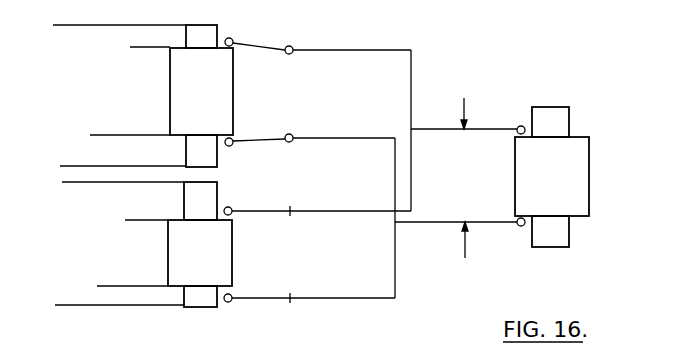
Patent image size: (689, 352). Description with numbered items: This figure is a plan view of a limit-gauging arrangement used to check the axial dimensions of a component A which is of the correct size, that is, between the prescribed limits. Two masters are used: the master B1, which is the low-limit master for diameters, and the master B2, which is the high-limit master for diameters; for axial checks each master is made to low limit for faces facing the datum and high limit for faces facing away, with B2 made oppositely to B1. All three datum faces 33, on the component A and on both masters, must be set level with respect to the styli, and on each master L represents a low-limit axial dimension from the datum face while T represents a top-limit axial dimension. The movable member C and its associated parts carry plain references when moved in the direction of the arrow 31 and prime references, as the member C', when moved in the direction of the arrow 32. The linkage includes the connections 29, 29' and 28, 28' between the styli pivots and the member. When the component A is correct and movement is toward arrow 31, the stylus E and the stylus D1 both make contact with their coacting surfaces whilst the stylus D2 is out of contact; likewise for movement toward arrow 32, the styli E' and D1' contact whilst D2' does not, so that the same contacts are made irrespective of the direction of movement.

The datum faces 33 is at (208, 24).
The connecting rod 29 is at (322, 38).
The connecting rod 29' is at (314, 126).
The connecting rod 28 is at (321, 201).
The connecting rod 28' is at (313, 288).
The arrow 31 is at (466, 120).
The arrow 32 is at (466, 234).
The component A is at (589, 178).
The master B1 is at (170, 92).
The master B2 is at (168, 253).
The movable member C is at (464, 130).
The movable member C' is at (456, 218).
The stylus D1 is at (251, 37).
The stylus D1' is at (250, 132).
The stylus D2 is at (247, 204).
The stylus D2' is at (249, 289).
The stylus E is at (513, 123).
The stylus E' is at (507, 215).
The top-limit axial dimension T is at (68, 25).
The low-limit axial dimension L is at (145, 25).